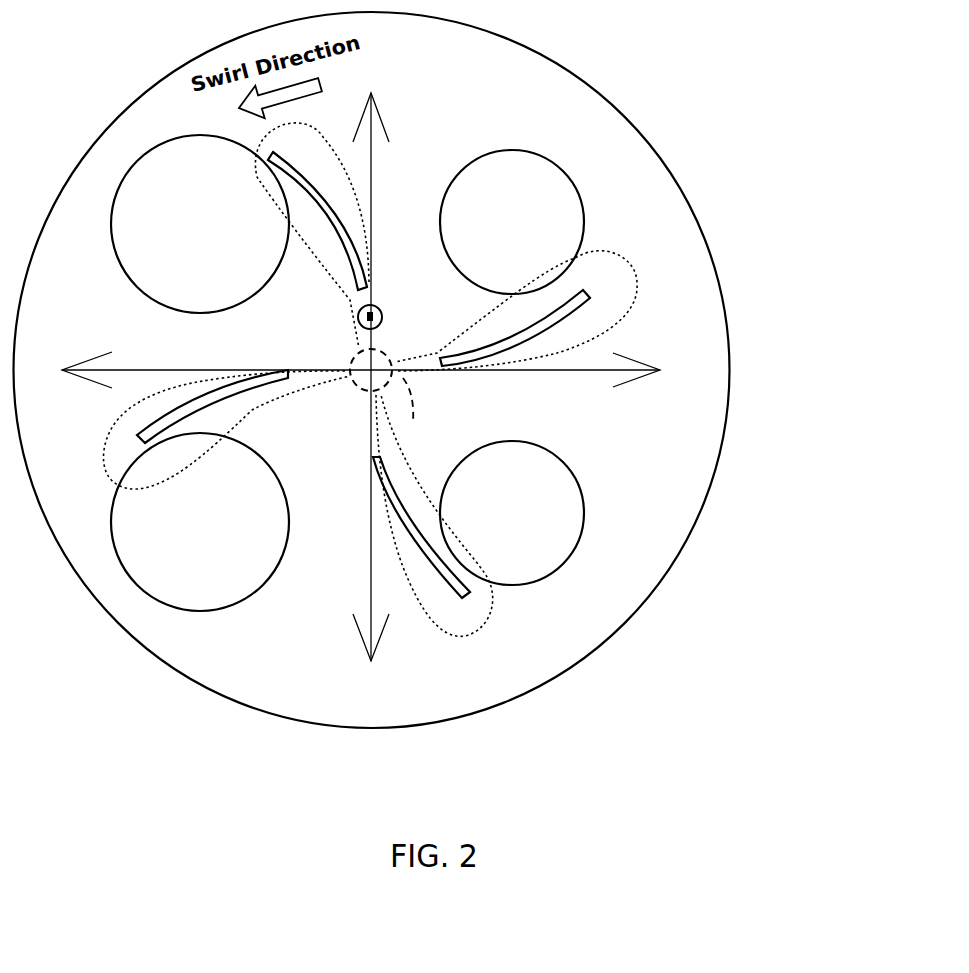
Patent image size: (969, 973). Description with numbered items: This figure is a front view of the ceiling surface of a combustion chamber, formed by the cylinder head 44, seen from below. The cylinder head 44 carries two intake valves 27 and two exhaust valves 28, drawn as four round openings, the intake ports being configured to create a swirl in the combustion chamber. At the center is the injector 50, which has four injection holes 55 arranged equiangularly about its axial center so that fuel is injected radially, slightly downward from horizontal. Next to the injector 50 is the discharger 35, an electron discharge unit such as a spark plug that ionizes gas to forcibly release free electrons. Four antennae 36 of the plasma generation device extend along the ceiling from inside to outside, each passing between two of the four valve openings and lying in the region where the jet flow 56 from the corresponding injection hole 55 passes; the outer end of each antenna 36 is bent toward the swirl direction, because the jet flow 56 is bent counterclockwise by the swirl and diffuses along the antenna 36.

The cylinder head 44 is at (674, 180).
The intake valve 27 is at (143, 188).
The exhaust valve 28 is at (458, 178).
The antenna 36 is at (588, 298).
The jet flow 56 is at (598, 251).
The discharger 35 is at (383, 313).
The injector 50 is at (352, 390).
The injection hole 55 is at (429, 416).